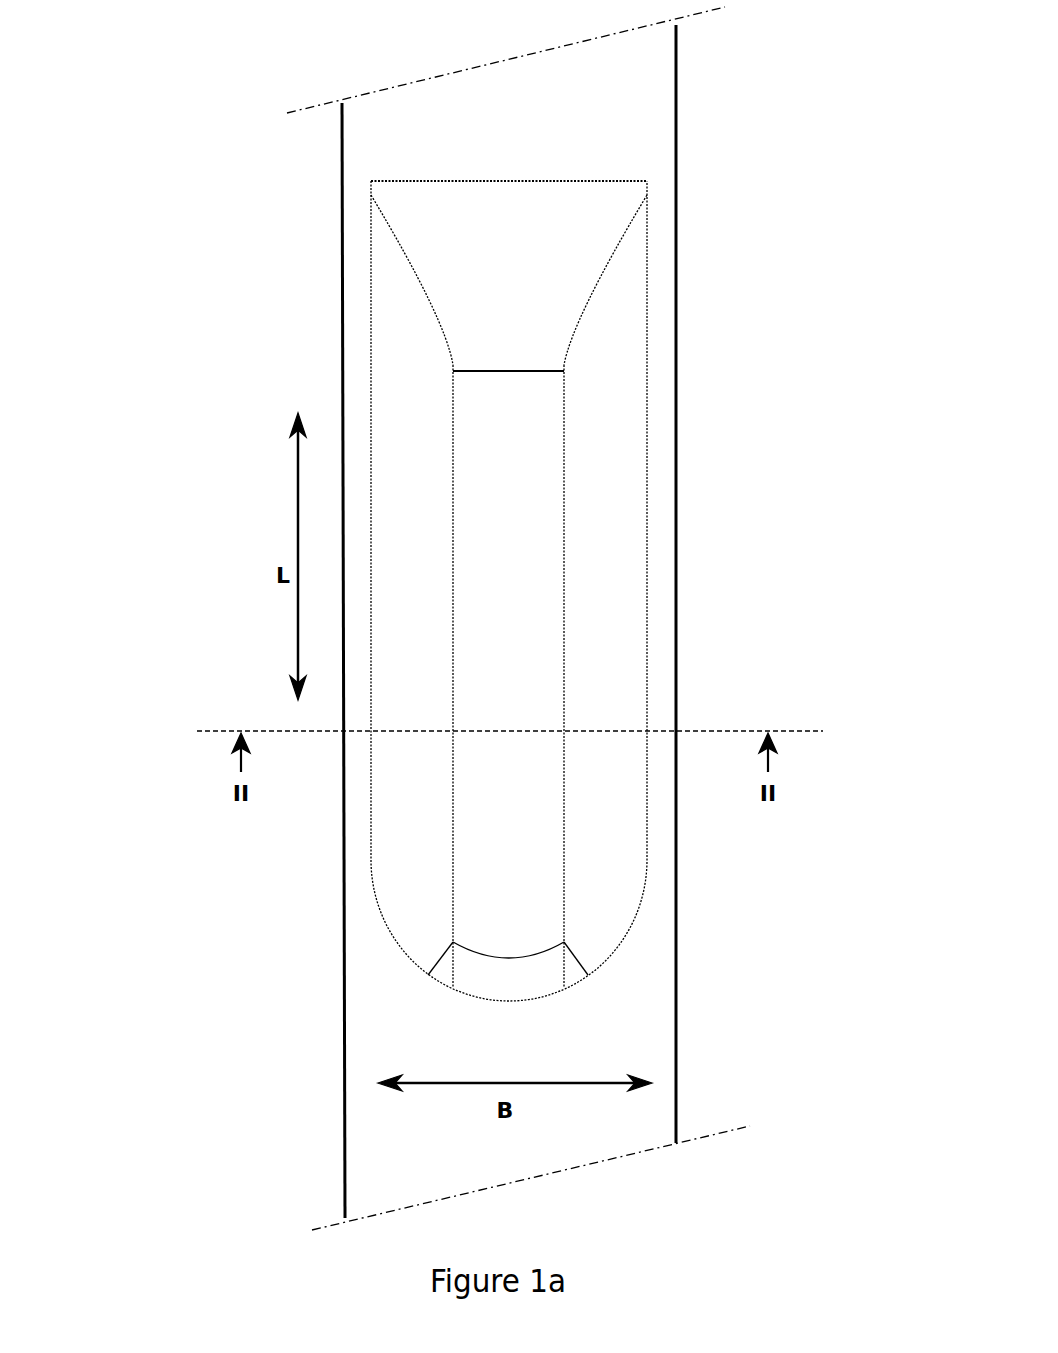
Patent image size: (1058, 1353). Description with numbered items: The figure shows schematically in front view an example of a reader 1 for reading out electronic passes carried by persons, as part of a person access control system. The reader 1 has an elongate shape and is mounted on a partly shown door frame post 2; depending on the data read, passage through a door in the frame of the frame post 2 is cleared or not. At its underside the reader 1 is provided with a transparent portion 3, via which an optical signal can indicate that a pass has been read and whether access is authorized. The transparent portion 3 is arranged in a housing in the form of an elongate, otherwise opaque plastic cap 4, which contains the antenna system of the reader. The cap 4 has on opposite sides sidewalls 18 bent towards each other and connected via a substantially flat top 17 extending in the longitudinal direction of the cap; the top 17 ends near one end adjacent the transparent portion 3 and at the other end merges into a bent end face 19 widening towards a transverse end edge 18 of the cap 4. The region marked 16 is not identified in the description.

The reader 1 is at (722, 554).
The door frame post 2 is at (521, 139).
The transparent portion 3 is at (344, 983).
The cap 4 is at (639, 280).
The side wall 16 is at (502, 591).
The top 17 is at (687, 676).
The sidewalls 18 is at (646, 116).
The bent end face 19 is at (501, 283).